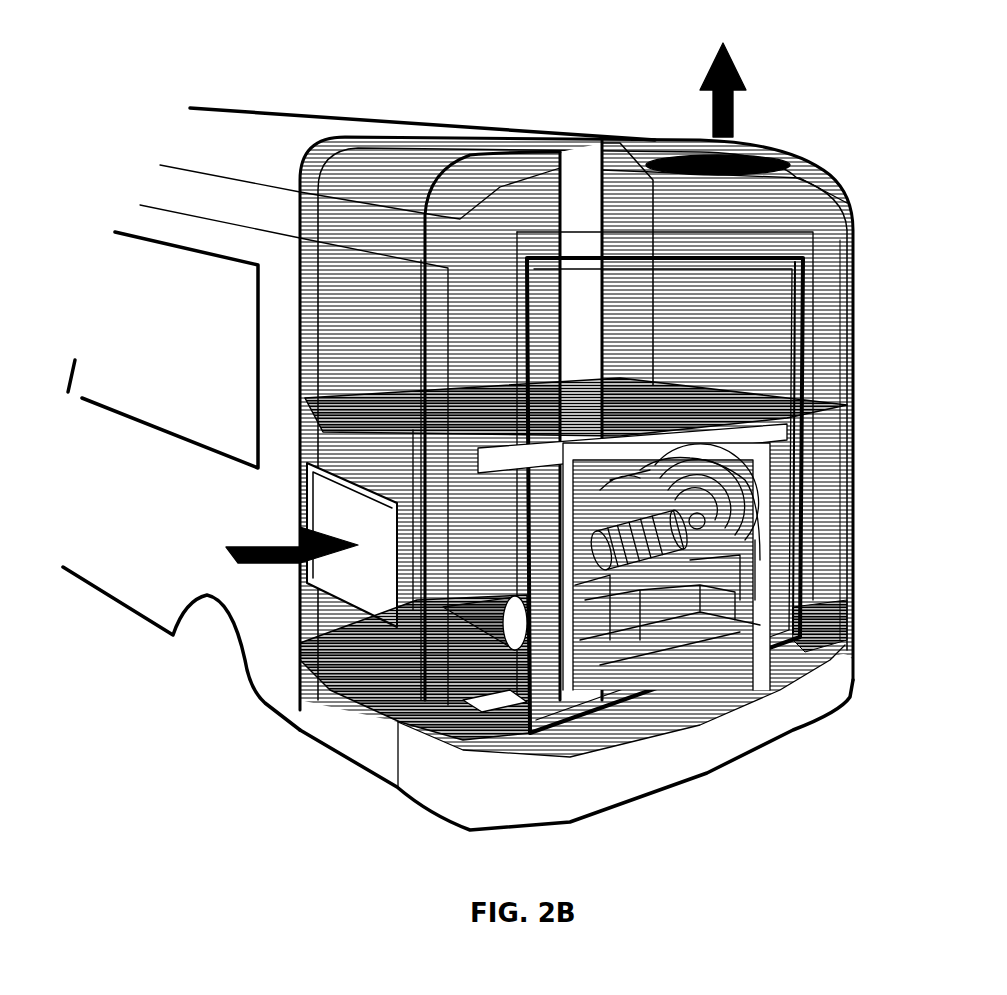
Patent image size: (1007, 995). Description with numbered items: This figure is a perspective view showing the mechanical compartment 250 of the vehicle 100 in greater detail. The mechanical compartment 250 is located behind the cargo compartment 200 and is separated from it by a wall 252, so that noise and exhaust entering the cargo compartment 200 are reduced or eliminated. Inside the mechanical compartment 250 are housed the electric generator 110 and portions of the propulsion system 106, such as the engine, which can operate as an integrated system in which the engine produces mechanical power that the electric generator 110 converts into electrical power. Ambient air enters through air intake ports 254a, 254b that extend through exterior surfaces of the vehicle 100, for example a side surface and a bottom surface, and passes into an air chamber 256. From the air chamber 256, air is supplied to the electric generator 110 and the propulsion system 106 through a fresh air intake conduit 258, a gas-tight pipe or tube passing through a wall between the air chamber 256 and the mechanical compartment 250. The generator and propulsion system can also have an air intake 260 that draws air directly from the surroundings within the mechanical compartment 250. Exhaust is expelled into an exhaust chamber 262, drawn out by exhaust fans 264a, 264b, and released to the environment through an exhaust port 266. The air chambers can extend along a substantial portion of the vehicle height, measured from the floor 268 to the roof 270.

The vehicle 100 is at (593, 60).
The propulsion system 106 is at (672, 493).
The electric generator 110 is at (587, 512).
The cargo compartment 200 is at (293, 97).
The mechanical compartment 250 is at (783, 713).
The wall 252 is at (505, 173).
The air intake port 254a is at (360, 565).
The air intake port 254b is at (493, 705).
The air chamber 256 is at (352, 445).
The fresh air intake conduit 258 is at (612, 595).
The air intake 260 is at (732, 567).
The exhaust chamber 262 is at (840, 452).
The exhaust fan 264a is at (782, 520).
The exhaust fan 264b is at (793, 155).
The exhaust port 266 is at (760, 153).
The floor 268 is at (527, 747).
The roof 270 is at (418, 153).